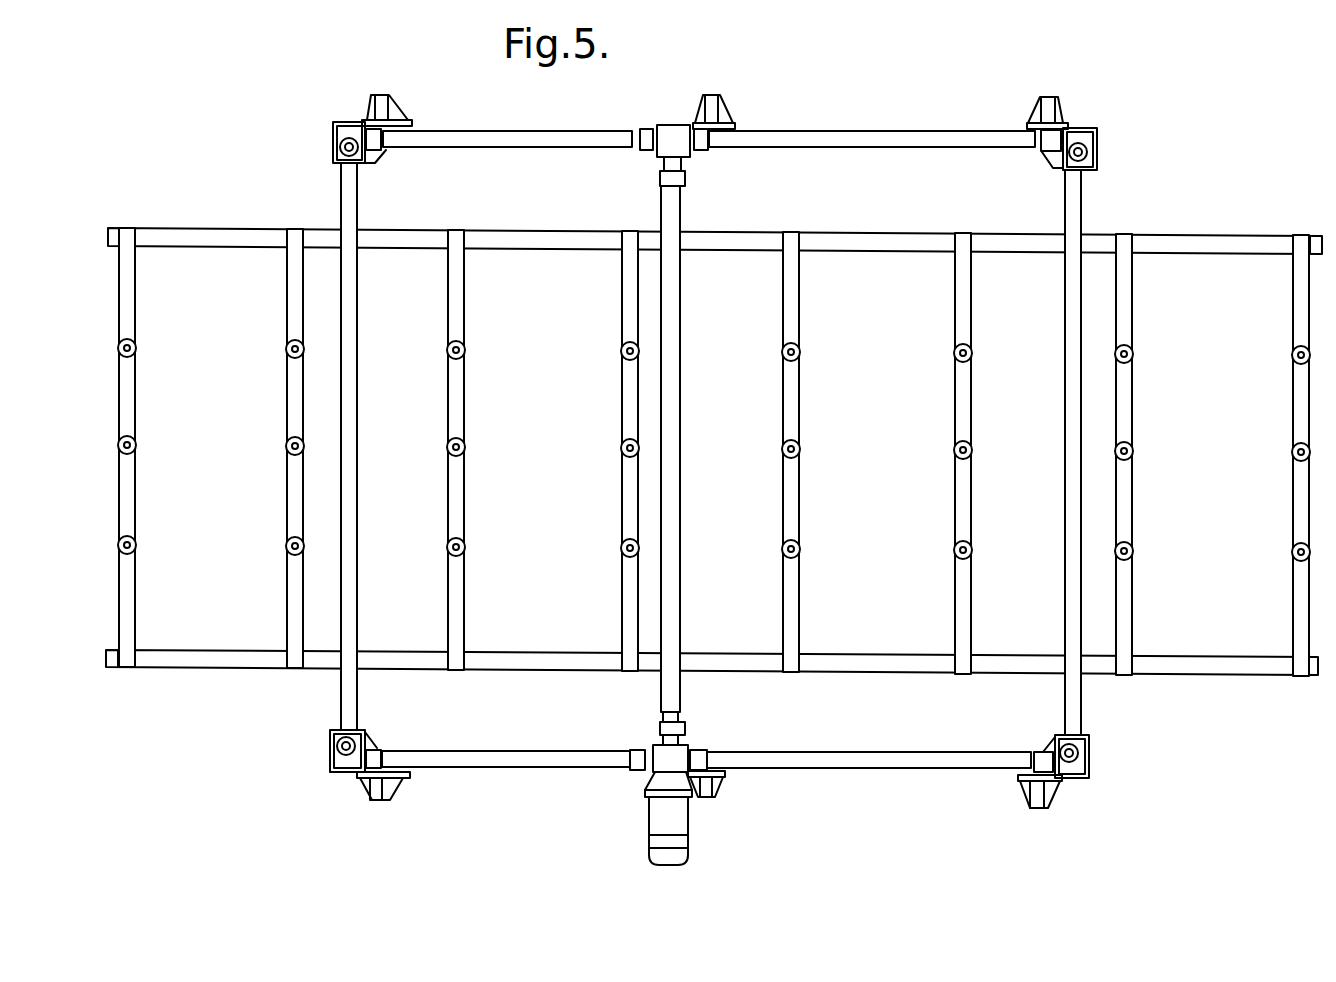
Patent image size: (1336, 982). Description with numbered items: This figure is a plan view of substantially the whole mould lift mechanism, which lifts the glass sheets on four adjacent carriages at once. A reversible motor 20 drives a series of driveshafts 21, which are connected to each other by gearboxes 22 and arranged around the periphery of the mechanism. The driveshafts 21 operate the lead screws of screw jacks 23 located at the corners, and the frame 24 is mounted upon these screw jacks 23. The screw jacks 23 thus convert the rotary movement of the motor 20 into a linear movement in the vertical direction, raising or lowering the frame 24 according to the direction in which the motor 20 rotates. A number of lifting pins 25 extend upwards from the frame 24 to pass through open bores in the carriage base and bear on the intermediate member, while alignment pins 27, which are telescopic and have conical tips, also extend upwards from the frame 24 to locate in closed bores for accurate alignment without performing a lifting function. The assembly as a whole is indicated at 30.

The motor 20 is at (672, 851).
The driveshafts 21 is at (512, 130).
The gearboxes 22 is at (674, 128).
The screw jacks 23 is at (338, 126).
The frame 24 is at (1183, 238).
The lifting pins 25 is at (286, 349).
The alignment pins 27 is at (286, 446).
The sprinkler assembly mounting feet 30 is at (742, 82).